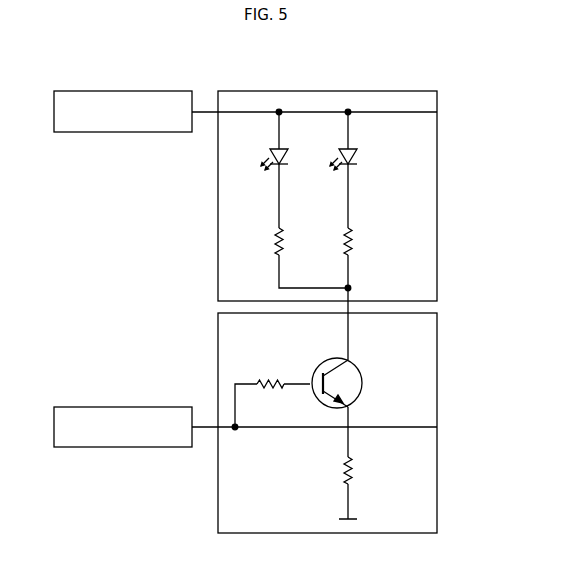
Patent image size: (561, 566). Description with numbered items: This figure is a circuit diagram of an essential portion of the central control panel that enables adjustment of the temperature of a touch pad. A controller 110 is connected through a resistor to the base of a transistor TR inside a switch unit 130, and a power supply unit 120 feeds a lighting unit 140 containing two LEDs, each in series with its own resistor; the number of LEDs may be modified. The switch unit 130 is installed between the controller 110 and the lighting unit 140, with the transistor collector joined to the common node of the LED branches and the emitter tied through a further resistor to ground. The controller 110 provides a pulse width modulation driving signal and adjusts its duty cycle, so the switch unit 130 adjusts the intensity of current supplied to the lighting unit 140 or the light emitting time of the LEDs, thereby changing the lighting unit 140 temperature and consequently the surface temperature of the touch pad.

The controller 110 is at (147, 406).
The power supply unit 120 is at (147, 91).
The switch unit 130 is at (438, 383).
The lighting unit 140 is at (437, 196).